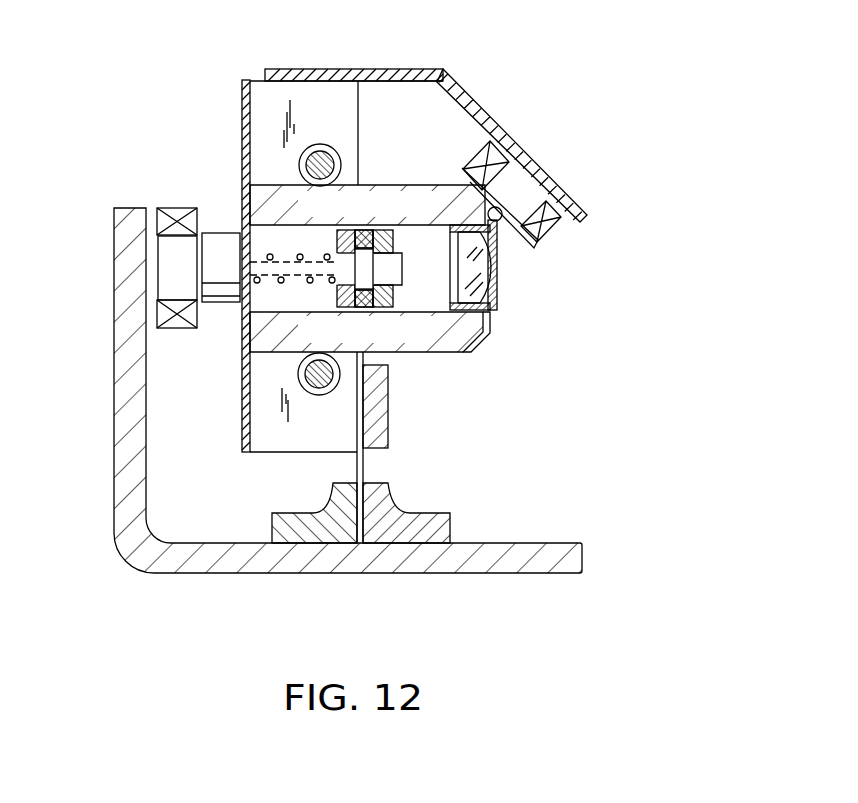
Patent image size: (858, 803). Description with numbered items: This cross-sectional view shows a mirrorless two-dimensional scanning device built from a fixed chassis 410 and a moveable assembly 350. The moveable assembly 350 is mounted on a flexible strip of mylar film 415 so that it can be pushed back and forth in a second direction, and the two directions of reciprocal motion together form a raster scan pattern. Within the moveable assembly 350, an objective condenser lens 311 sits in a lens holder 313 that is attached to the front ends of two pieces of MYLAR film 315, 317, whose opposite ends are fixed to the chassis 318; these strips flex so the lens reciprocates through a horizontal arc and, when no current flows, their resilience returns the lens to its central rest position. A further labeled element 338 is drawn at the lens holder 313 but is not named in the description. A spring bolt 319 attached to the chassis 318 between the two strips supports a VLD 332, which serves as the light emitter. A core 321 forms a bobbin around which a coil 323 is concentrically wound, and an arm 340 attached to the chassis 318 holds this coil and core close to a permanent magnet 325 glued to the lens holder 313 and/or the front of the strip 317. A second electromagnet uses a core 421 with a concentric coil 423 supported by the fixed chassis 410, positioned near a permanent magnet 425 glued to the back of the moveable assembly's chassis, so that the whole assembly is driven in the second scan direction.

The objective condenser lens 311 is at (494, 313).
The lens holder 313 is at (493, 334).
The MYLAR film strip 315 is at (425, 353).
The MYLAR film strip 317 is at (412, 190).
The chassis 318 is at (240, 98).
The spring bolt 319 is at (250, 268).
The core 321 is at (538, 244).
The coil 323 is at (540, 242).
The permanent magnet 325 is at (502, 220).
The VLD 332 is at (337, 258).
The lens 338 is at (498, 272).
The arm 340 is at (562, 195).
The moveable assembly 350 is at (553, 94).
The fixed chassis 410 is at (112, 514).
The flexible strip of mylar film 415 is at (365, 465).
The core 421 is at (198, 314).
The coil 423 is at (168, 207).
The permanent magnet 425 is at (224, 233).